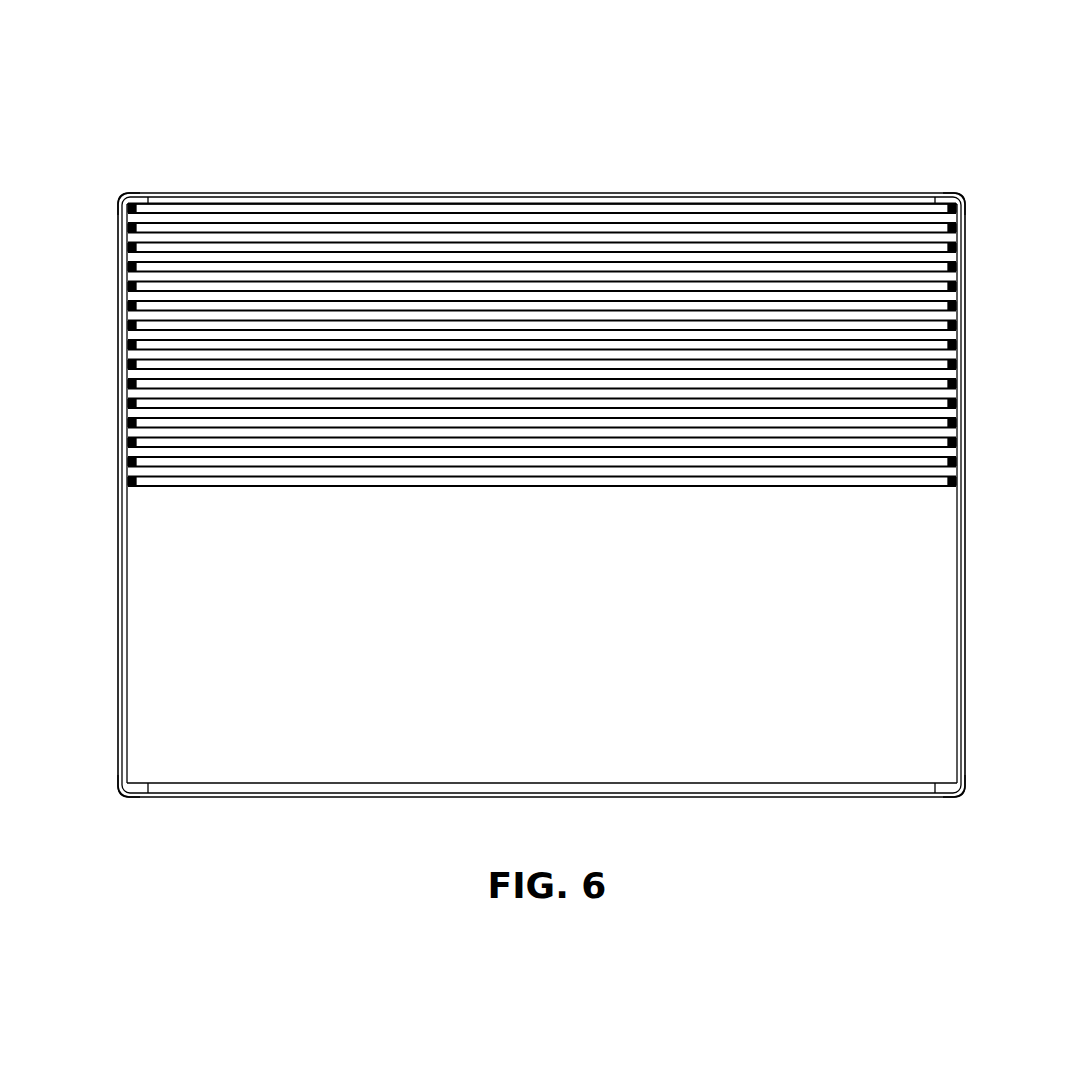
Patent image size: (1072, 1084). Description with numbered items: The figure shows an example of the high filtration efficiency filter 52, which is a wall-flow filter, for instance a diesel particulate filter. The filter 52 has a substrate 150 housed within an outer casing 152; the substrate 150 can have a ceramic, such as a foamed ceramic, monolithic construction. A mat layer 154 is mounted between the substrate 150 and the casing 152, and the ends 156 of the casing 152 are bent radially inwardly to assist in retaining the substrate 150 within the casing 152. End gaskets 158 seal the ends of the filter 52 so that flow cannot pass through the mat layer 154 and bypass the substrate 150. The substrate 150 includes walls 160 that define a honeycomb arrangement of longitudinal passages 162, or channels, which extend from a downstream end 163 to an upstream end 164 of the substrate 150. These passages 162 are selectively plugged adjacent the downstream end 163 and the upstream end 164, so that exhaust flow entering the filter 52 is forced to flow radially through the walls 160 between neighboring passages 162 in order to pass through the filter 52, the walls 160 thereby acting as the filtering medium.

The high filtration efficiency filter 52 is at (806, 115).
The substrate 150 is at (918, 405).
The outer casing 152 is at (715, 192).
The mat layer 154 is at (307, 200).
The ends of the casing 156 is at (121, 200).
The end gaskets 158 is at (132, 200).
The walls 160 is at (433, 225).
The longitudinal passages 162 is at (390, 230).
The downstream end 163 is at (968, 544).
The upstream end 164 is at (118, 584).